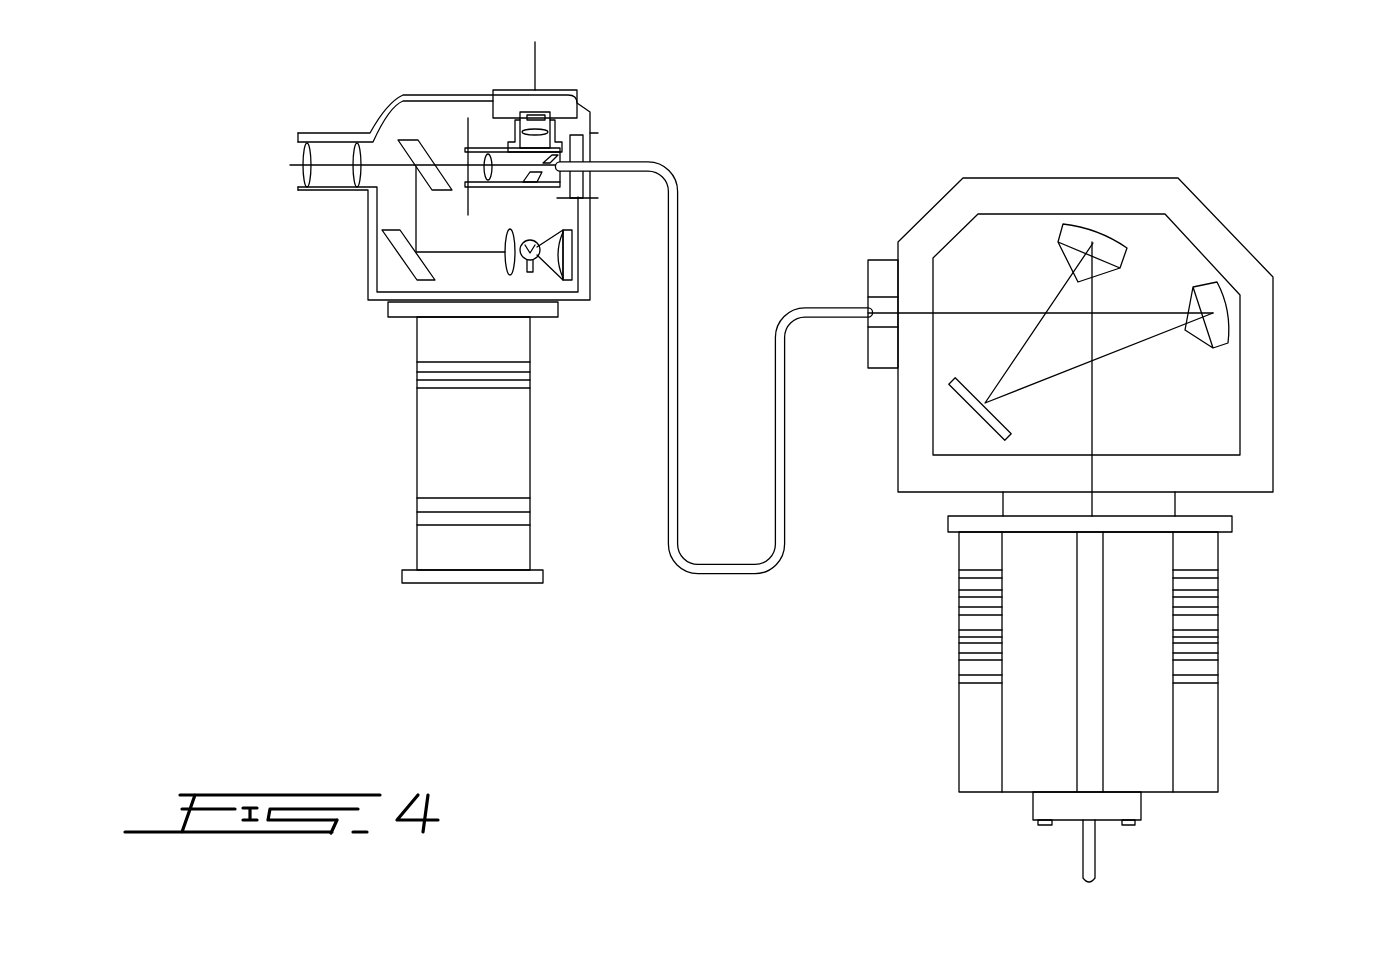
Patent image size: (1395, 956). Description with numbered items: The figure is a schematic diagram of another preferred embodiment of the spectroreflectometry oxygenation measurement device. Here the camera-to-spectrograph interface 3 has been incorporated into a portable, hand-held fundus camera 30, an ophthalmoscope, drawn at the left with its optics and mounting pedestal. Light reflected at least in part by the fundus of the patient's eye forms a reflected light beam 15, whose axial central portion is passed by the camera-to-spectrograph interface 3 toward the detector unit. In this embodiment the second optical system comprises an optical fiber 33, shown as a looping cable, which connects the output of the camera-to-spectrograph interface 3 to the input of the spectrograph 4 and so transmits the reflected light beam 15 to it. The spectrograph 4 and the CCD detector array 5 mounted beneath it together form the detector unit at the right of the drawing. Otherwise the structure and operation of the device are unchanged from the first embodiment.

The camera-to-spectrograph interface 3 is at (483, 148).
The spectrograph 4 is at (1232, 233).
The CCD detector array 5 is at (958, 623).
The reflected light beam 15 is at (442, 153).
The portable, hand-held fundus camera 30 is at (365, 293).
The optical fiber 33 is at (677, 567).